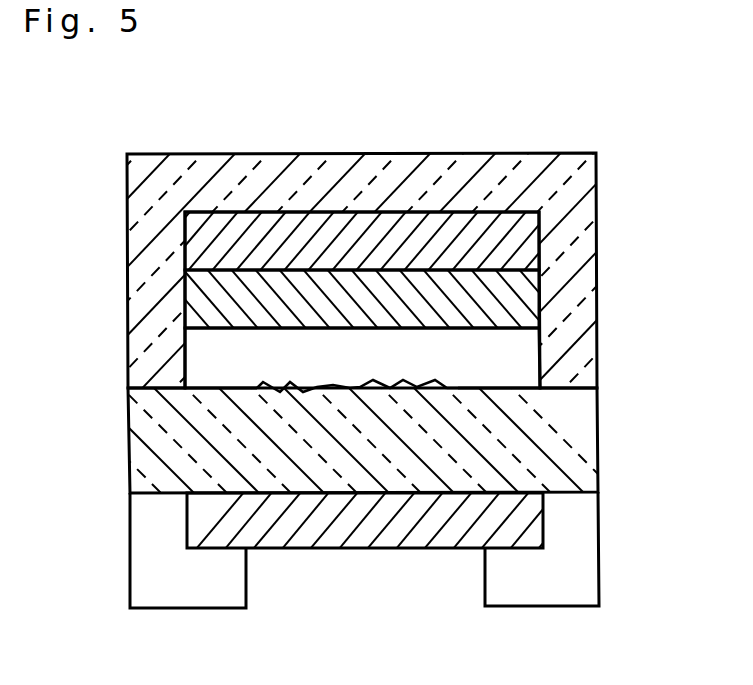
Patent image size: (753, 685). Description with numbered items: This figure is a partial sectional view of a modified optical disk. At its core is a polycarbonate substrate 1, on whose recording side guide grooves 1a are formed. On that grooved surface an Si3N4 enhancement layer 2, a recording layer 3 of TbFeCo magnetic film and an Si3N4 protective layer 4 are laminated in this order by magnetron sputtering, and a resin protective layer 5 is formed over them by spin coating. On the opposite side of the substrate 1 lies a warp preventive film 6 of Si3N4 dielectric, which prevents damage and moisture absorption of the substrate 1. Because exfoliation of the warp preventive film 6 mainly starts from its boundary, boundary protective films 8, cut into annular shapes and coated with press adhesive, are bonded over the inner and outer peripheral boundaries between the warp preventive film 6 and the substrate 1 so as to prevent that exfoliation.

The polycarbonate substrate 1 is at (336, 440).
The guide grooves 1a is at (244, 417).
The Si3N4 enhancement layer 2 is at (432, 358).
The recording layer 3 is at (403, 300).
The Si3N4 protective layer 4 is at (407, 240).
The epoxy resin protective layer 5 is at (376, 260).
The warp preventive film 6 is at (444, 520).
The boundary protective films 8 is at (408, 553).